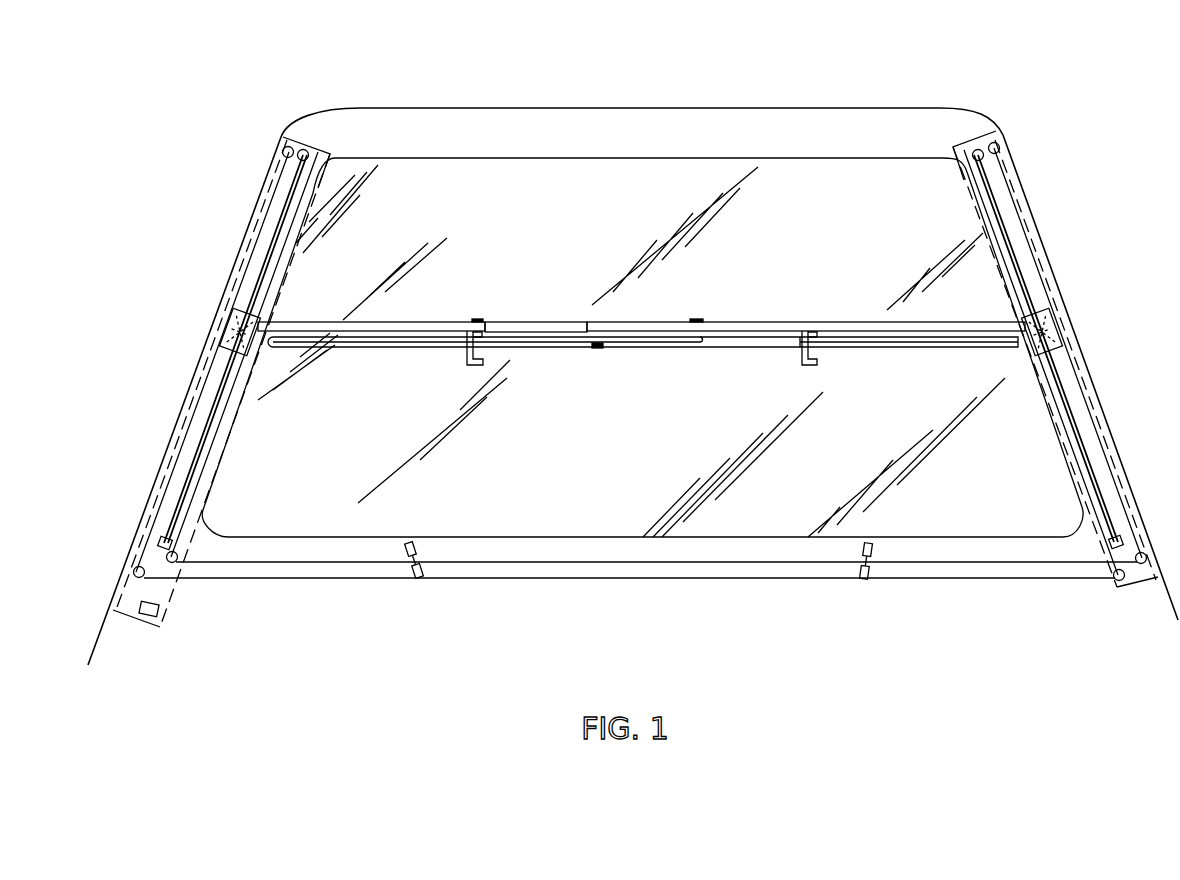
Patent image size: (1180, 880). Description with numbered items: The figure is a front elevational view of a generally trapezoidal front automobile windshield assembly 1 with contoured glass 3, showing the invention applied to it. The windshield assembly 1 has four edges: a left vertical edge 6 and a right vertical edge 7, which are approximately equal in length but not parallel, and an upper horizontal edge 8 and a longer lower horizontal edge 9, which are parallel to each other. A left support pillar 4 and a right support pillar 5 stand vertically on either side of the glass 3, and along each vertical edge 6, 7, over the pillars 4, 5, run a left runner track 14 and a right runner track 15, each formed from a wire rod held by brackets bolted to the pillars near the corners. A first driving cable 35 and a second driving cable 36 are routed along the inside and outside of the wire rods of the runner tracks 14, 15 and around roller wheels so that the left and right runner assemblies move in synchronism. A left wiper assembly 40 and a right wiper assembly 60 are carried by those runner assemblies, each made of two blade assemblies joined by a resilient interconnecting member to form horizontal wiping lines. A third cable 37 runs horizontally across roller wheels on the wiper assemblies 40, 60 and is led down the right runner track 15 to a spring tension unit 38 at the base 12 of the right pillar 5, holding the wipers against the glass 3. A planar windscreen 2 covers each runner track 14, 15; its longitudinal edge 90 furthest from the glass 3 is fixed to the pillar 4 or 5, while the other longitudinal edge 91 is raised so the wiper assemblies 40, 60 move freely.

The windshield assembly 1 is at (637, 66).
The planar windscreen 2 is at (325, 142).
The contoured glass 3 is at (537, 240).
The left support pillar 4 is at (1018, 167).
The right support pillar 5 is at (268, 172).
The left vertical edge 6 is at (980, 217).
The right vertical edge 7 is at (283, 290).
The upper horizontal edge 8 is at (787, 160).
The lower horizontal edge 9 is at (508, 537).
The base of the right pillar 12 is at (72, 598).
The left runner track 14 is at (1098, 297).
The right runner track 15 is at (157, 318).
The first driving cable 35 is at (913, 563).
The second driving cable 36 is at (768, 582).
The third cable 37 is at (500, 322).
The spring tension unit 38 is at (160, 611).
The left wiper assembly 40 is at (801, 304).
The right wiper assembly 60 is at (446, 309).
The longitudinal edge of the windscreen 90 is at (257, 212).
The other longitudinal edge of the windscreen 91 is at (300, 232).